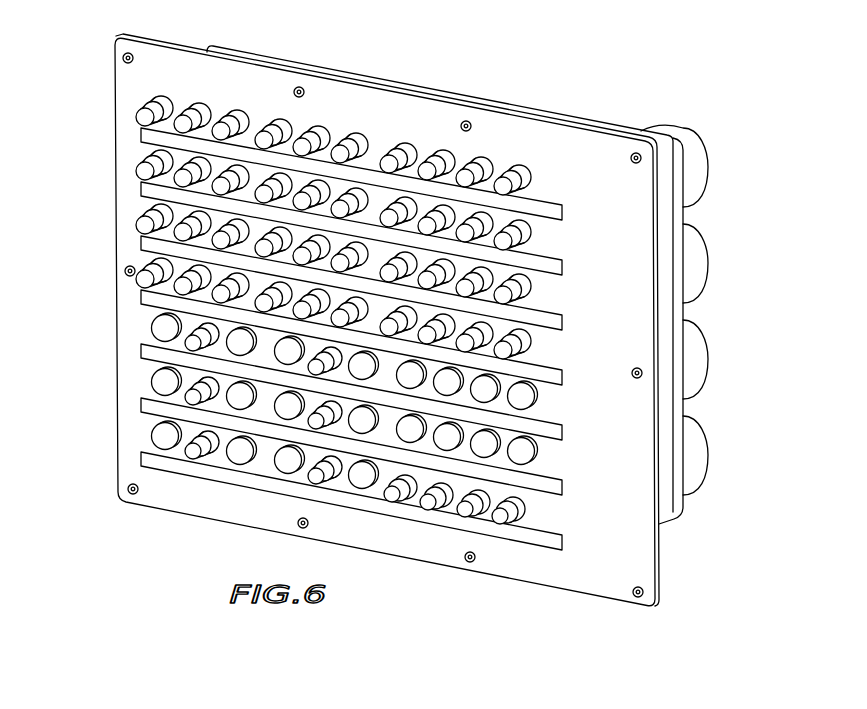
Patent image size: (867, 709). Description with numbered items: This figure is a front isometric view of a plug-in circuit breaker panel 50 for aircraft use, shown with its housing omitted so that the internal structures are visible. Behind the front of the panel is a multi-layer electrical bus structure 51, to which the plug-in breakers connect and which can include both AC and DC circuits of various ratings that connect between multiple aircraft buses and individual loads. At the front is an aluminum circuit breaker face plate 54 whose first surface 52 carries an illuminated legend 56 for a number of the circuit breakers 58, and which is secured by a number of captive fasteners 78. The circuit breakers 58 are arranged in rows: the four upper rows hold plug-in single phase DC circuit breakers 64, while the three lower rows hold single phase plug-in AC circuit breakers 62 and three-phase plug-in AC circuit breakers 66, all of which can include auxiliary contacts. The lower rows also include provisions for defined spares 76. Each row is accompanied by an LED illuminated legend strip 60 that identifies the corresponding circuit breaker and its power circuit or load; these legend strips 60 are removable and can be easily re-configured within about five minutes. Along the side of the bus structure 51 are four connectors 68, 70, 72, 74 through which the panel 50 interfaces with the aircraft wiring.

The plug-in circuit breaker panel 50 is at (71, 202).
The electrical bus structure 51 is at (690, 503).
The first surface 52 is at (568, 575).
The face plate 54 is at (666, 570).
The illuminated legend 56 is at (122, 424).
The circuit breakers 58 is at (553, 187).
The LED illuminated legend strips 60 is at (562, 212).
The single phase AC circuit breakers 62 is at (515, 505).
The single phase DC circuit breakers 64 is at (351, 145).
The three-phase AC circuit breakers 66 is at (207, 455).
The connector 68 is at (692, 165).
The connector 70 is at (693, 262).
The connector 72 is at (693, 356).
The connector 74 is at (693, 453).
The provisions for defined spares 76 is at (407, 433).
The captive fasteners 78 is at (122, 58).